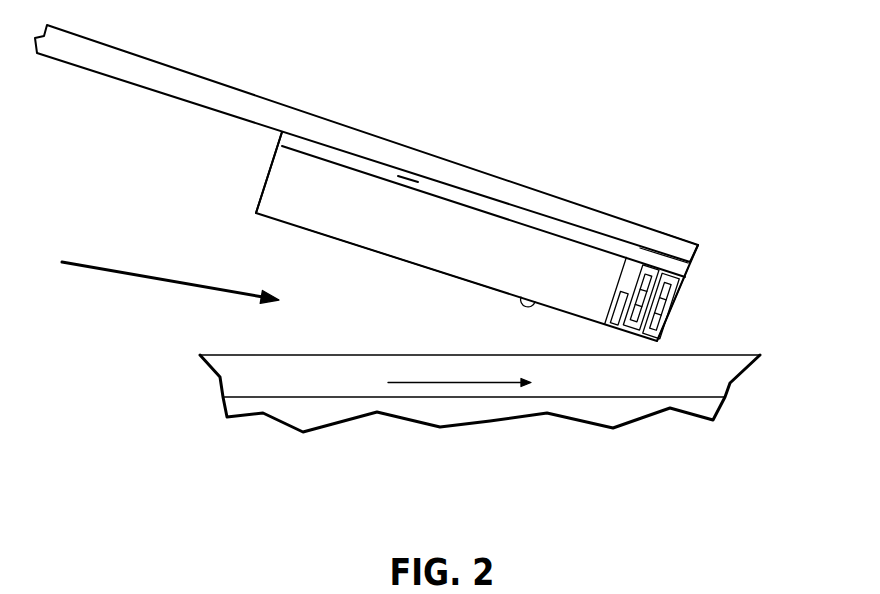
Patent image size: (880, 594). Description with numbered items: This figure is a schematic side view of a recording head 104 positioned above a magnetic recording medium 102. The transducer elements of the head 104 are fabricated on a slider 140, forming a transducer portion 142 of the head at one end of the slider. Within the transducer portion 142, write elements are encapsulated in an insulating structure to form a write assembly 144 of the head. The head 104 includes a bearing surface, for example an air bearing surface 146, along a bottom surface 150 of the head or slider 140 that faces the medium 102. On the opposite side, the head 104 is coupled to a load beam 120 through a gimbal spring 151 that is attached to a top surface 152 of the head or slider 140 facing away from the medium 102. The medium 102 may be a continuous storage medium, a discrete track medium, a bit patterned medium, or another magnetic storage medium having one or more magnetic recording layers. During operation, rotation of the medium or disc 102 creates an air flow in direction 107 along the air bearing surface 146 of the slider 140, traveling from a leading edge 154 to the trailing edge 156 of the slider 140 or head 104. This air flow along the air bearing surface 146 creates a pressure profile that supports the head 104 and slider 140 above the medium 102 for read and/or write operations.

The medium 102 is at (695, 388).
The head 104 is at (694, 227).
The air flow direction 107 is at (457, 382).
The load beam 120 is at (302, 122).
The slider 140 is at (444, 227).
The transducer portion 142 is at (698, 275).
The write assembly 144 is at (668, 247).
The air bearing surface 146 is at (408, 276).
The bottom surface 150 is at (538, 305).
The gimbal spring 151 is at (410, 177).
The top surface 152 is at (537, 223).
The leading edge 154 is at (263, 192).
The trailing edge 156 is at (678, 300).